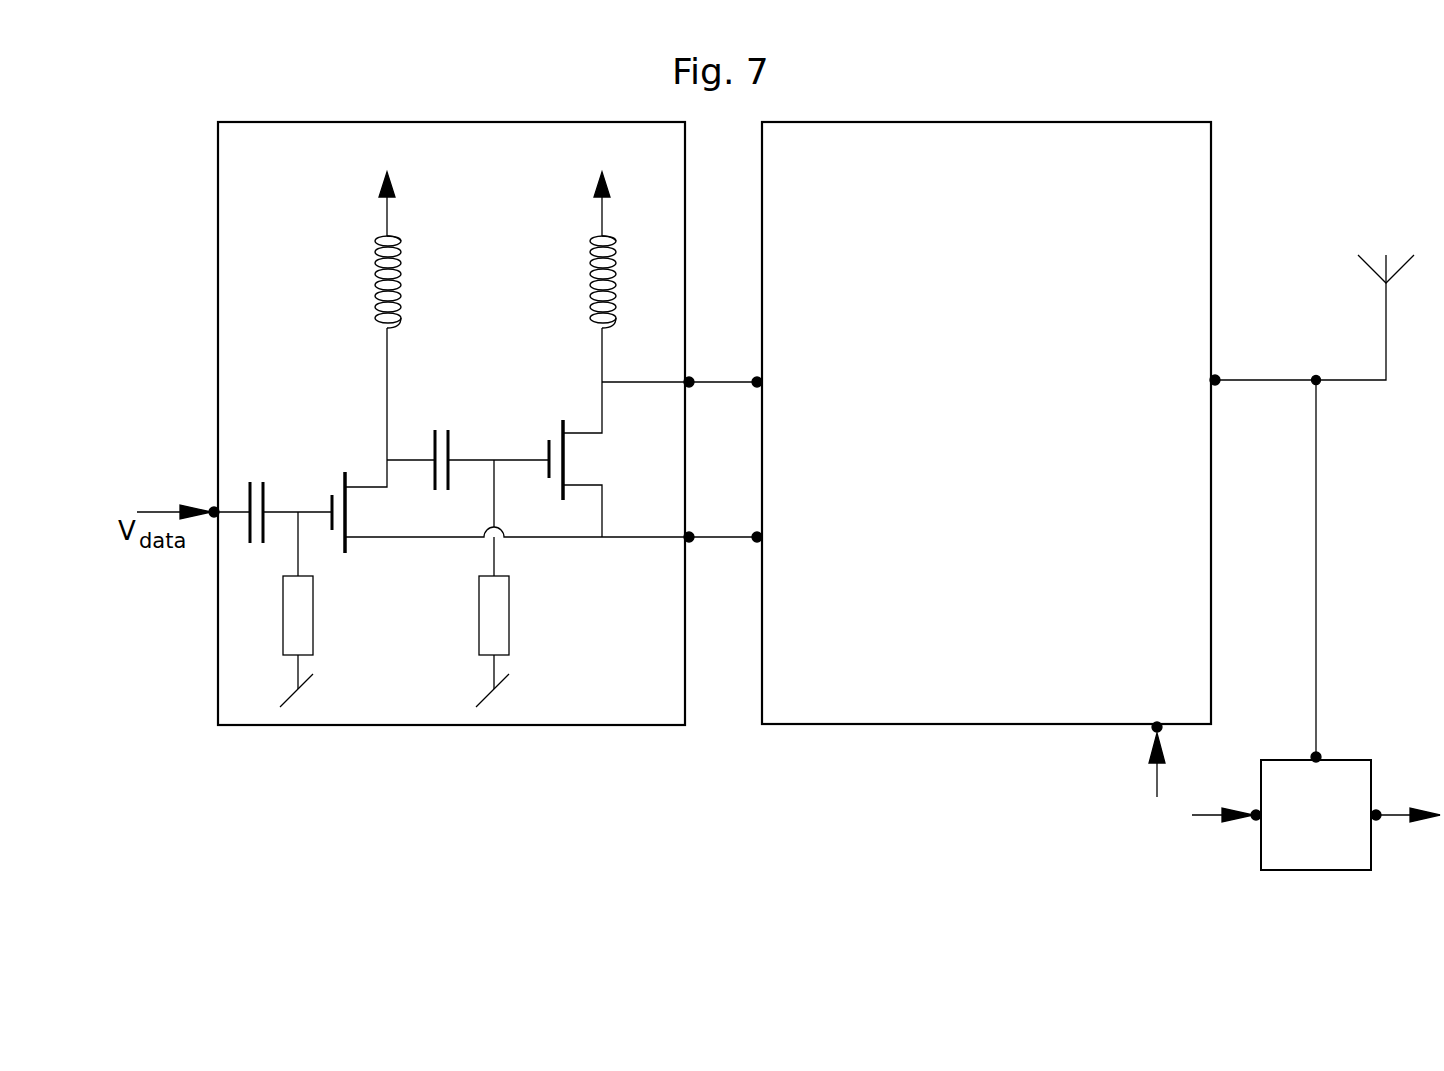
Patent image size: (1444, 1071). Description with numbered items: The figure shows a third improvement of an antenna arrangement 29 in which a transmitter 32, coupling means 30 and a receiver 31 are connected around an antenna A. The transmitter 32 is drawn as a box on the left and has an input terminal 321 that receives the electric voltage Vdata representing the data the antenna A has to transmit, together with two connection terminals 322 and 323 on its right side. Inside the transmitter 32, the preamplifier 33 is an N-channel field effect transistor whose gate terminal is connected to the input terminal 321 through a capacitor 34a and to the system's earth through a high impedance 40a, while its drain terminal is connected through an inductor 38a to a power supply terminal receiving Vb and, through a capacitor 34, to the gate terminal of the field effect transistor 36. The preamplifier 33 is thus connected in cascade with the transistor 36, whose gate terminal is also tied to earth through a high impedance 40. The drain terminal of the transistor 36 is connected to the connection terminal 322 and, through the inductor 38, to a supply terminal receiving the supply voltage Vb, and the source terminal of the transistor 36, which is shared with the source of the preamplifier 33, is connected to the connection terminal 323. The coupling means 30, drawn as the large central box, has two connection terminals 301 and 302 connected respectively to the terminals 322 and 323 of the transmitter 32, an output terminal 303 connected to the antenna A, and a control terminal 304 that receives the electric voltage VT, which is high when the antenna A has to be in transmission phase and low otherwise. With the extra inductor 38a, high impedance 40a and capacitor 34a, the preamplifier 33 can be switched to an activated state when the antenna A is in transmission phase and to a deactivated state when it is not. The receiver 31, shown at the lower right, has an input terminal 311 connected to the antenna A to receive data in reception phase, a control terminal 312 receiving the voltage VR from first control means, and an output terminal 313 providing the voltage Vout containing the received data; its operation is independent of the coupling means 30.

The antenna arrangement 29 is at (668, 757).
The transmitter 32 is at (342, 725).
The input terminal 321 is at (212, 510).
The capacitor 34a is at (250, 497).
The preamplifier 33 is at (328, 510).
The capacitor 34 is at (461, 454).
The field effect transistor 36 is at (543, 454).
The inductor 38a is at (402, 290).
The inductor 38 is at (617, 290).
The high impedance 40a is at (306, 627).
The high impedance 40 is at (502, 627).
The connection terminal 322 is at (692, 380).
The connection terminal 323 is at (692, 535).
The connection terminal 301 is at (755, 384).
The connection terminal 302 is at (755, 540).
The coupling means 30 is at (873, 724).
The output terminal 303 is at (1220, 378).
The control terminal 304 is at (1152, 730).
The input terminal 311 is at (1320, 754).
The receiver 31 is at (1316, 862).
The control terminal 312 is at (1254, 820).
The output terminal 313 is at (1378, 820).